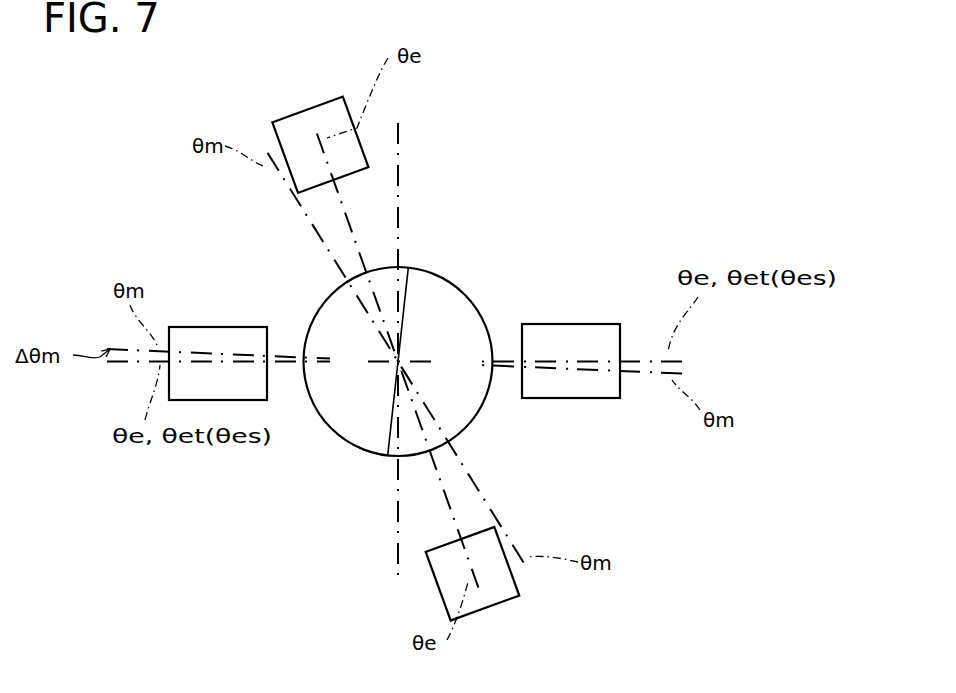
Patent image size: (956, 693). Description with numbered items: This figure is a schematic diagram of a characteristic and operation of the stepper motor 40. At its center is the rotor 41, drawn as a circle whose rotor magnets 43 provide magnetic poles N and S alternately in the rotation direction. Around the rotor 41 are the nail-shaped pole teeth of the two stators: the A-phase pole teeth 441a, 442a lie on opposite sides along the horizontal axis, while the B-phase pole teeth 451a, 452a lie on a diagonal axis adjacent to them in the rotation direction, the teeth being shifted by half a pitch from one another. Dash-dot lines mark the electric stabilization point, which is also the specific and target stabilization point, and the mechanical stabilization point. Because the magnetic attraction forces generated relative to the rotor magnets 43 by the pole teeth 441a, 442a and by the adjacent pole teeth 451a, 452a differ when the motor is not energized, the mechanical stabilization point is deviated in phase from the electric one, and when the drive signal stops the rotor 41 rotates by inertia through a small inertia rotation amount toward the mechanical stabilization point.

The stepper motor 40 is at (445, 172).
The rotor 41 is at (432, 336).
The rotor magnets 43 is at (440, 277).
The pole teeth 441a is at (190, 333).
The pole teeth 442a is at (572, 330).
The pole teeth 451a is at (302, 112).
The pole teeth 452a is at (500, 590).